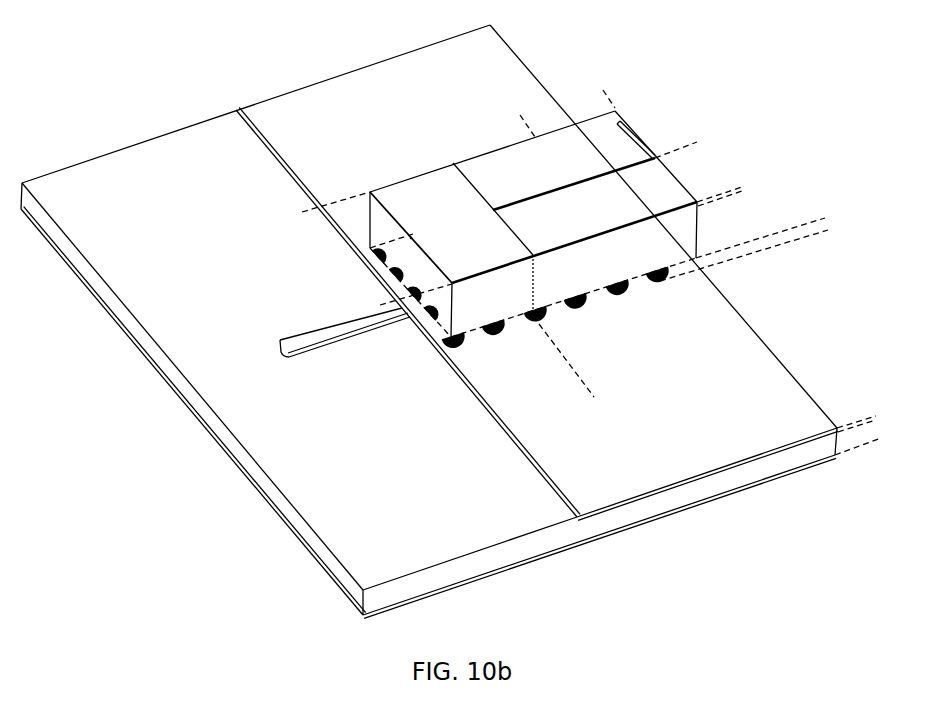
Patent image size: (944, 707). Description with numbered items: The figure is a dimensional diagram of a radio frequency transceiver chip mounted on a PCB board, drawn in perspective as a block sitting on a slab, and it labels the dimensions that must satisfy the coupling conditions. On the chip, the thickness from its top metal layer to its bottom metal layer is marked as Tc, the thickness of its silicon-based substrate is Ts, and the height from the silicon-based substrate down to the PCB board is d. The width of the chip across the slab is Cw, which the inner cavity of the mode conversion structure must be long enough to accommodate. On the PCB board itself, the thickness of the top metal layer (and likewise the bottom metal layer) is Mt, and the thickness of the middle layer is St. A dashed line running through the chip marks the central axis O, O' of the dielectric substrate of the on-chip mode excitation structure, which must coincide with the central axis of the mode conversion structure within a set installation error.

The width of the radio frequency transceiver chip Cw is at (310, 215).
The chip metal-layer thickness Tc is at (712, 214).
The silicon-based substrate thickness Ts is at (743, 192).
The height from the silicon-based substrate to the PCB board d is at (813, 247).
The PCB metal layer thickness Mt is at (863, 436).
The PCB middle layer thickness St is at (862, 426).
The central axis endpoint of the dielectric substrate O is at (421, 231).
The central axis endpoint of the dielectric substrate O' is at (680, 140).